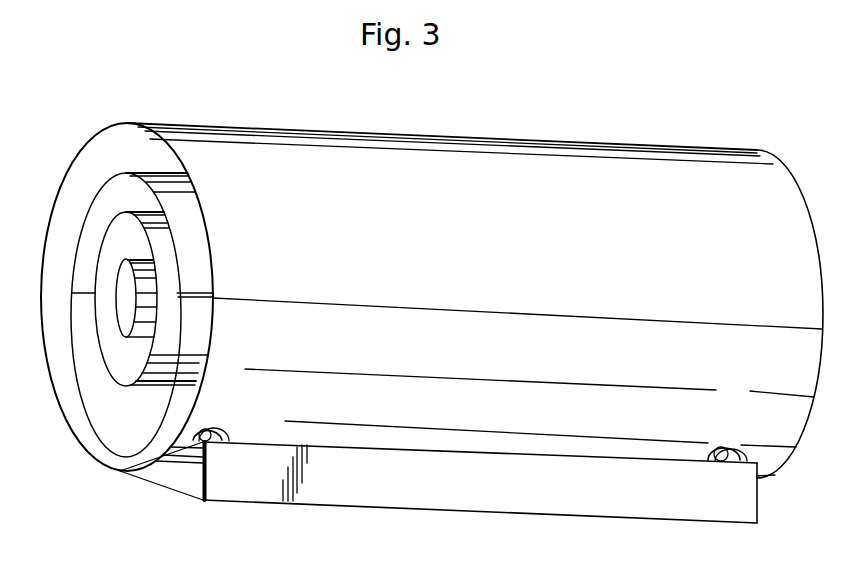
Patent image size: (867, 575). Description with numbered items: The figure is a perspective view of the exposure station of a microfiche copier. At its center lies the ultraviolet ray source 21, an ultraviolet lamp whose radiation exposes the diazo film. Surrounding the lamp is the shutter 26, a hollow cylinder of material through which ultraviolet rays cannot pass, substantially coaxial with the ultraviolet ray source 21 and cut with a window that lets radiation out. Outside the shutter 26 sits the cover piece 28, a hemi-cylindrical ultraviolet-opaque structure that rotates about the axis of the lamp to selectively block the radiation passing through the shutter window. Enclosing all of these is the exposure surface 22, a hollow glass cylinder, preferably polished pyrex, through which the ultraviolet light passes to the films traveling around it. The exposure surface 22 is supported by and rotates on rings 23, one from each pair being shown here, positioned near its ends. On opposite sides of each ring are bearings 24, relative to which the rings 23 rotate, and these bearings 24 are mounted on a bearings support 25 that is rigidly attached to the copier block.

The ultraviolet ray source 21 is at (208, 326).
The exposure surface 22 is at (106, 127).
The rings 23 is at (210, 420).
The bearings 24 is at (224, 436).
The bearings support 25 is at (478, 498).
The shutter 26 is at (154, 338).
The cover piece 28 is at (177, 260).